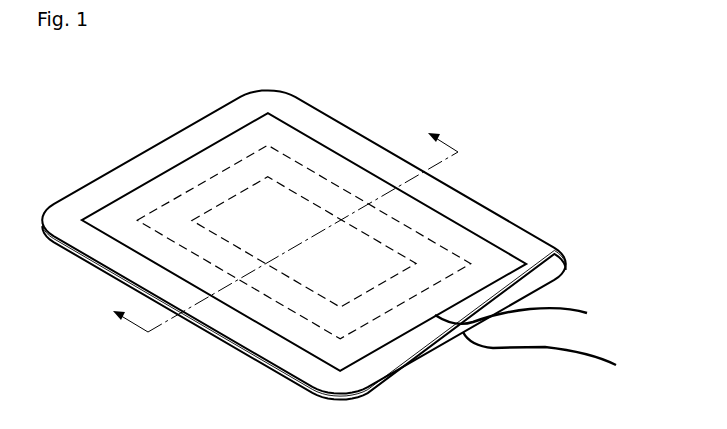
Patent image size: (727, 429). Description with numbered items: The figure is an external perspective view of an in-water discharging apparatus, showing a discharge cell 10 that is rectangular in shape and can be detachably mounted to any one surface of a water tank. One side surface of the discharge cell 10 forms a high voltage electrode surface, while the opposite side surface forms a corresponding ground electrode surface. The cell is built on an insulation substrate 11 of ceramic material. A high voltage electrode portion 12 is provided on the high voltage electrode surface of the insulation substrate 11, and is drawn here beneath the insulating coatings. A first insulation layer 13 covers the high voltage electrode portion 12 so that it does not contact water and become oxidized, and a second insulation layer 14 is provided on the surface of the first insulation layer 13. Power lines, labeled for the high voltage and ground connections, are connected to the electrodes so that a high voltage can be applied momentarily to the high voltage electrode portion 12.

The discharge cell 10 is at (346, 234).
The insulation substrate 11 is at (395, 355).
The high voltage electrode portion 12 is at (300, 193).
The first insulation layer 13 is at (438, 241).
The second insulation layer 14 is at (201, 148).